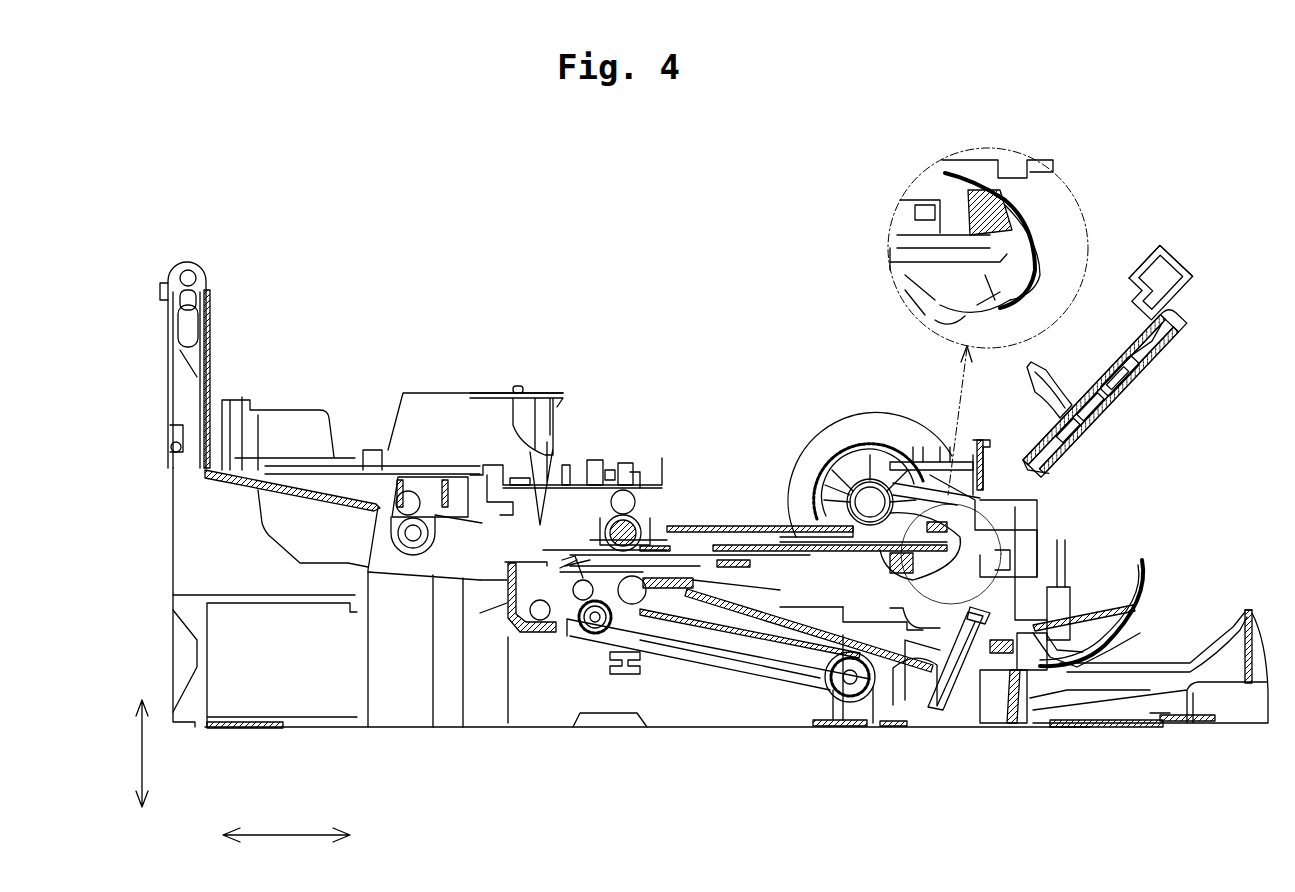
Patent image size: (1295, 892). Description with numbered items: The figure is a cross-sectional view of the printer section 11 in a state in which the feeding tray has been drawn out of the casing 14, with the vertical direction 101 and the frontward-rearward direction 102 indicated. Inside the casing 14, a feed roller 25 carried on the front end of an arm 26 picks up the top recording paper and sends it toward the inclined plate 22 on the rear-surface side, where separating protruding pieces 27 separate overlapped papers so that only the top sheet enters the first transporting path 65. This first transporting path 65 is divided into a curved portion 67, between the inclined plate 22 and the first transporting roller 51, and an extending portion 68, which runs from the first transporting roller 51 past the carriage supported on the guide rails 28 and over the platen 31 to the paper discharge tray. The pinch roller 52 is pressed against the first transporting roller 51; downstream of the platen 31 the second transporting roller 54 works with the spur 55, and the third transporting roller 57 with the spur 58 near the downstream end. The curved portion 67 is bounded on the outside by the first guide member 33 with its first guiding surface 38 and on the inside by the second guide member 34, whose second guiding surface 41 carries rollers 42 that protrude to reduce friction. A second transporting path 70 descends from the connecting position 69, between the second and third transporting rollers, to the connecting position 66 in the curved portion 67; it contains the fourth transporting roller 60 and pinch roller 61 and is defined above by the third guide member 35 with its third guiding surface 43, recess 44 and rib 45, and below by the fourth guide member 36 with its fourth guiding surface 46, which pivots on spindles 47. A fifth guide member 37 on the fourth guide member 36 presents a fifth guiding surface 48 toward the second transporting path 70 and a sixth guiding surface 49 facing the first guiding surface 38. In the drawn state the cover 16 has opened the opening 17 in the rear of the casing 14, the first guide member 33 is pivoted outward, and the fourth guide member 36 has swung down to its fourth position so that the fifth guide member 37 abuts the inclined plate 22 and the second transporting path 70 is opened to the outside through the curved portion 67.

The printer section 11 is at (796, 304).
The casing 14 is at (170, 348).
The cover 16 is at (1143, 752).
The opening 17 is at (192, 552).
The inclined plate 22 is at (977, 647).
The feed roller 25 is at (805, 645).
The arm 26 is at (713, 597).
The separating protruding piece 27 is at (940, 663).
The guide rail 28 is at (645, 485).
The platen 31 is at (743, 527).
The first guide member 33 is at (1173, 611).
The second guide member 34 is at (1023, 233).
The third guide member 35 is at (733, 580).
The fourth guide member 36 is at (769, 638).
The fifth guide member 37 is at (998, 625).
The first guiding surface 38 is at (1127, 600).
The second guiding surface 41 is at (1037, 270).
The roller 42 is at (1037, 270).
The third guiding surface 43 is at (777, 543).
The recess 44 is at (993, 302).
The rib 45 is at (963, 317).
The fourth guiding surface 46 is at (807, 650).
The spindle 47 is at (632, 604).
The fifth guiding surface 48 is at (910, 660).
The sixth guiding surface 49 is at (993, 720).
The first transporting roller 51 is at (845, 462).
The pinch roller 52 is at (872, 478).
The second transporting roller 54 is at (618, 518).
The spur 55 is at (614, 470).
The third transporting roller 57 is at (362, 450).
The spur 58 is at (418, 477).
The fourth transporting roller 60 is at (681, 572).
The pinch roller 61 is at (710, 563).
The first transporting path 65 is at (987, 180).
The connecting position 66 is at (1033, 553).
The curved portion 67 is at (1020, 197).
The extending portion 68 is at (803, 520).
The connecting position 69 is at (540, 525).
The second transporting path 70 is at (578, 572).
The vertical direction 101 is at (142, 753).
The frontward-rearward direction 102 is at (292, 833).